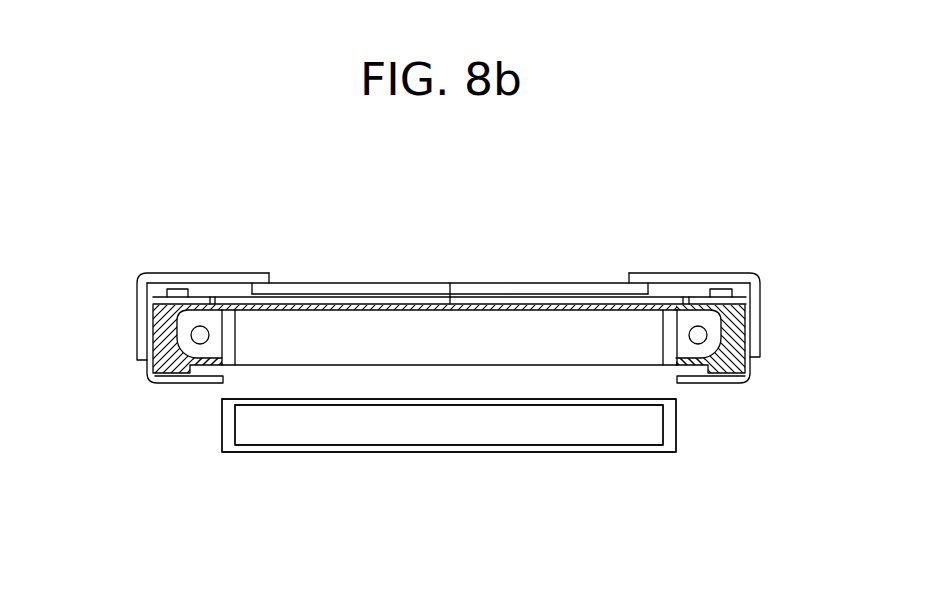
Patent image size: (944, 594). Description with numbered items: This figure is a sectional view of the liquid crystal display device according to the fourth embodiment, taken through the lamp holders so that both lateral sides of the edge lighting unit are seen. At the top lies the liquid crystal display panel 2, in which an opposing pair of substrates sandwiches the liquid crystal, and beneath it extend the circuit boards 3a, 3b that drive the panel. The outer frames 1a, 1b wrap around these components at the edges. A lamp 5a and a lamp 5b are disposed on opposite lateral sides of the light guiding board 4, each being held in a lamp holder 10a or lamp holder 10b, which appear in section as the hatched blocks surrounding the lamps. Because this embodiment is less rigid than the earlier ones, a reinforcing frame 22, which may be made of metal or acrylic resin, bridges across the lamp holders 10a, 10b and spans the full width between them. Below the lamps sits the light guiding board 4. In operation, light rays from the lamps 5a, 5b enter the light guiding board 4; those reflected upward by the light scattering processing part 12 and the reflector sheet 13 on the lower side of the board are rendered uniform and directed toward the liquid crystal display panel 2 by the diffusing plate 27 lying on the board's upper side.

The frame 1a is at (690, 280).
The frame 1b is at (730, 385).
The liquid crystal display panel 2 is at (468, 287).
The circuit board 3a is at (198, 297).
The circuit board 3b is at (735, 303).
The light guiding board 4 is at (560, 432).
The lamp 5a is at (200, 335).
The lamp 5b is at (700, 335).
The lamp holder 10a is at (158, 385).
The lamp holder 10b is at (748, 356).
The light scattering processing part 12 is at (445, 447).
The reflector sheet 13 is at (445, 447).
The reinforcing frame 22 is at (550, 330).
The diffusing plate 27 is at (358, 400).